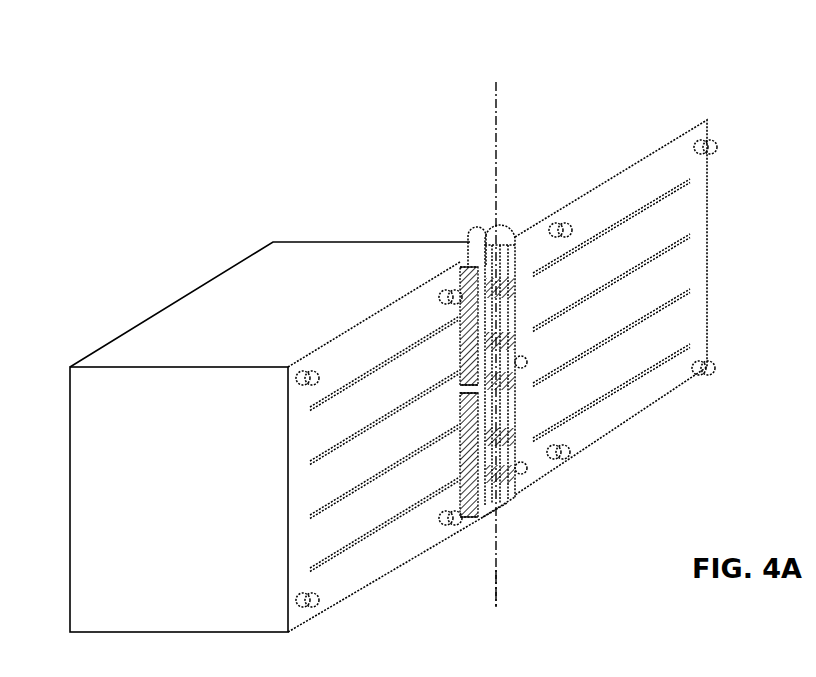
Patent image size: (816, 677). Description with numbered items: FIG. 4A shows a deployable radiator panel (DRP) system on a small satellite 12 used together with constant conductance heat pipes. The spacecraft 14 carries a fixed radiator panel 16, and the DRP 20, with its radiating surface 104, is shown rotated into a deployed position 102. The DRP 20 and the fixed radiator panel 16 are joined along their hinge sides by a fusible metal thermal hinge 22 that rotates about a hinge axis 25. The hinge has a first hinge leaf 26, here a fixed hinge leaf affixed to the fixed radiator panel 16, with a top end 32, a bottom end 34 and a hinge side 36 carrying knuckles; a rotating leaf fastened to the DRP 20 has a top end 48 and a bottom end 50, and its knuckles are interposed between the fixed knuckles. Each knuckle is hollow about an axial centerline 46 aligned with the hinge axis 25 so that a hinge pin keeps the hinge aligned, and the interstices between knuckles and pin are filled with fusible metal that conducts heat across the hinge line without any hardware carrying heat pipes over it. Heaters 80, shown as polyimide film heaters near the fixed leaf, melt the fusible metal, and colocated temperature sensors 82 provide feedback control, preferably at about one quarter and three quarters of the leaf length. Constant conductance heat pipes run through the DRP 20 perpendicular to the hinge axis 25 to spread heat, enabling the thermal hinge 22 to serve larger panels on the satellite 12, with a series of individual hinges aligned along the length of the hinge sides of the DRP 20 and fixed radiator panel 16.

The small satellite 12 is at (270, 437).
The spacecraft 14 is at (179, 499).
The fixed radiator panel 16 is at (385, 447).
The DRP 20 is at (638, 322).
The fusible metal thermal hinge 22 is at (475, 343).
The hinge axis 25 is at (500, 585).
The first hinge leaf 26 is at (478, 270).
The top end 32 is at (483, 240).
The bottom end 34 is at (490, 522).
The hinge side 36 is at (478, 378).
The axial centerline 46 is at (495, 100).
The top end 48 is at (508, 240).
The bottom end 50 is at (507, 511).
The heaters 80 is at (462, 352).
The temperature sensors 82 is at (527, 360).
The deployed position 102 is at (638, 322).
The radiating surface 104 is at (638, 294).